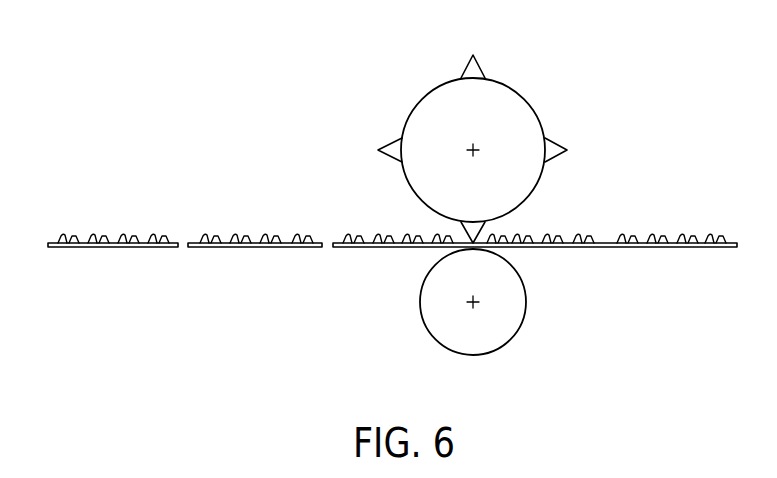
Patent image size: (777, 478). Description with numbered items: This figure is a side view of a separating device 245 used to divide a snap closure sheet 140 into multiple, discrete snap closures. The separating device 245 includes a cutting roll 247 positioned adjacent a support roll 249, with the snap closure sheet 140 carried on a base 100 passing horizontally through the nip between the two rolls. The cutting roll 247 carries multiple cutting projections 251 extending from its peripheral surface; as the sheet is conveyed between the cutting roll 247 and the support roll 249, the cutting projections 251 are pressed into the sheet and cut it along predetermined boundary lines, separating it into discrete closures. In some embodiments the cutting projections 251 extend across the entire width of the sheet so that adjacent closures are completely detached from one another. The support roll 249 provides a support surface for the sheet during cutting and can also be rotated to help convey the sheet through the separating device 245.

The web substrate / base layer 100 is at (120, 247).
The snap closure sheet 140 is at (655, 225).
The separating device 245 is at (503, 134).
The cutting roll 247 is at (522, 115).
The support roll 249 is at (515, 308).
The cutting projections 251 is at (550, 157).